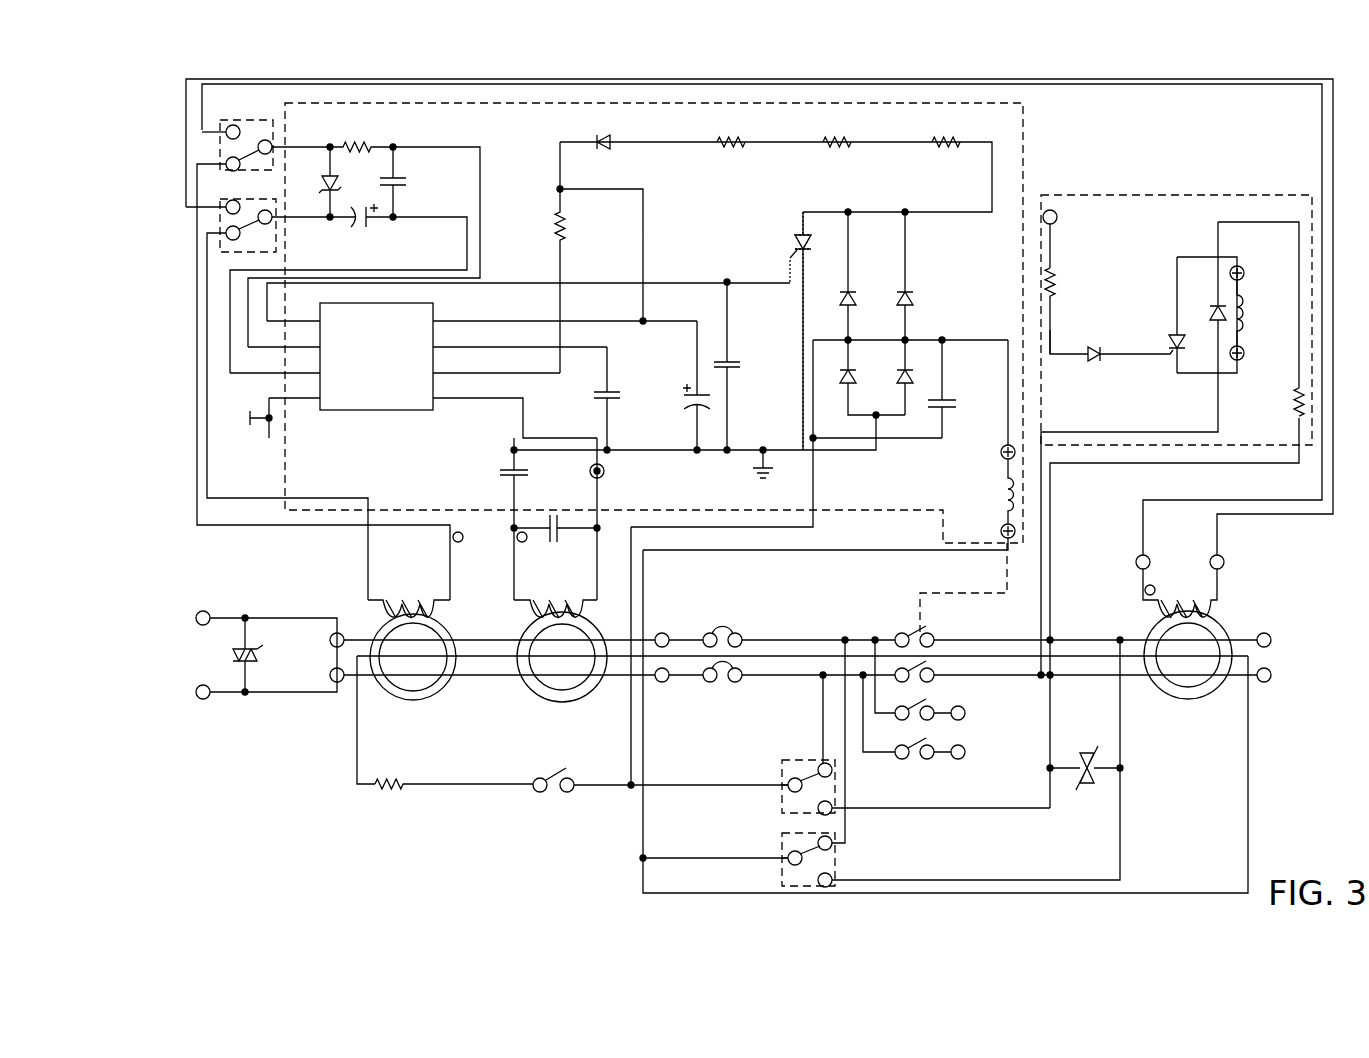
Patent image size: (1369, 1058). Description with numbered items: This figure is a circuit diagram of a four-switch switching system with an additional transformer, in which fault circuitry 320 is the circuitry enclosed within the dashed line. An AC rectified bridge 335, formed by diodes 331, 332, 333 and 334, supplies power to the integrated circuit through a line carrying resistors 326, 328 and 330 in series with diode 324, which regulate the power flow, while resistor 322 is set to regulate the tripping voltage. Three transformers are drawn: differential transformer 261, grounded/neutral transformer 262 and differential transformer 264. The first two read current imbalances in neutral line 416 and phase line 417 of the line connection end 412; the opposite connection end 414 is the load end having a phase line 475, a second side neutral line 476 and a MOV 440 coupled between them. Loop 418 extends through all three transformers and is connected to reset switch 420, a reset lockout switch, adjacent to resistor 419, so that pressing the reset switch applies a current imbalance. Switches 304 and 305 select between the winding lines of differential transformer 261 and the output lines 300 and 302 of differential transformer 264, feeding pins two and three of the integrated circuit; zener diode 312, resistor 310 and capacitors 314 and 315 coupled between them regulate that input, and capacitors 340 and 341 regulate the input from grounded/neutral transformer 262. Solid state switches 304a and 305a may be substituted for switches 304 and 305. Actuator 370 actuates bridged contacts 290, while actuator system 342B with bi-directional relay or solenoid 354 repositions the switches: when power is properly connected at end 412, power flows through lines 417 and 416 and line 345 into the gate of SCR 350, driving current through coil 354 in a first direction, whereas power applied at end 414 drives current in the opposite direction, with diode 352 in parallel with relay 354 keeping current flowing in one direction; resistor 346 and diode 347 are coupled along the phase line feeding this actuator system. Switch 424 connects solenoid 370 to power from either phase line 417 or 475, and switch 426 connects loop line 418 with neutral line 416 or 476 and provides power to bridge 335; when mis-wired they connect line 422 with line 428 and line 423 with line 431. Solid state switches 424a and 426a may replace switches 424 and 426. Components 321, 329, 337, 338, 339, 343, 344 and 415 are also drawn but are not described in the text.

The output line 300 is at (202, 122).
The output line 302 is at (236, 78).
The switch 304 is at (226, 148).
The solid state switch 304a is at (220, 134).
The switch 305 is at (226, 223).
The solid state switch 305a is at (220, 210).
The resistor 310 is at (363, 140).
The zener diode 312 is at (326, 175).
The capacitor 314 is at (400, 192).
The capacitor 315 is at (353, 230).
The fault circuitry 320 is at (1024, 165).
The integrated circuit U1 321 is at (433, 411).
The resistor 322 is at (557, 220).
The diode 324 is at (610, 138).
The resistor 326 is at (730, 136).
The resistor 328 is at (835, 136).
The capacitor 329 is at (949, 396).
The resistor 330 is at (945, 136).
The diode 331 is at (916, 300).
The diode 332 is at (913, 385).
The diode 333 is at (856, 385).
The diode 334 is at (858, 296).
The AC rectified bridge 335 is at (873, 232).
The capacitor 337 is at (723, 356).
The electrolytic capacitor 338 is at (700, 408).
The capacitor 339 is at (605, 382).
The capacitor 340 is at (500, 474).
The capacitor 341 is at (562, 516).
The actuator system 342B is at (1258, 186).
The ground 343 is at (760, 472).
The resistor 344 is at (1295, 404).
The line 345 is at (1050, 335).
The resistor 346 is at (1050, 268).
The diode 347 is at (1093, 362).
The SCR 350 is at (1172, 335).
The diode 352 is at (1213, 304).
The bi-directional relay 354 is at (1244, 300).
The actuator 370 is at (1018, 492).
The differential transformer 261 is at (385, 695).
The grounded/neutral transformer 262 is at (540, 700).
The differential transformer 264 is at (1228, 608).
The bridged contacts 290 is at (908, 628).
The line connection end 412 is at (222, 654).
The load connection end 414 is at (1333, 655).
The triac terminal 415 is at (258, 672).
The neutral line 416 is at (300, 693).
The phase line 417 is at (1060, 215).
The loop 418 is at (378, 790).
The resistor 419 is at (402, 790).
The reset switch 420 is at (552, 800).
The line 422 is at (631, 733).
The line 423 is at (643, 878).
The switch 424 is at (838, 860).
The solid state switch 424a is at (782, 872).
The switch 426 is at (812, 805).
The solid state switch 426a is at (782, 795).
The line 428 is at (940, 810).
The line 431 is at (1032, 878).
The MOV 440 is at (1085, 782).
The phase line 475 is at (1250, 633).
The second side neutral line 476 is at (1255, 682).